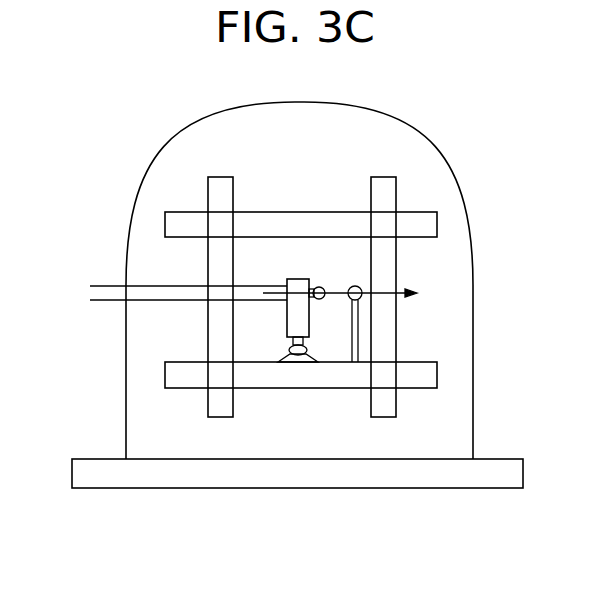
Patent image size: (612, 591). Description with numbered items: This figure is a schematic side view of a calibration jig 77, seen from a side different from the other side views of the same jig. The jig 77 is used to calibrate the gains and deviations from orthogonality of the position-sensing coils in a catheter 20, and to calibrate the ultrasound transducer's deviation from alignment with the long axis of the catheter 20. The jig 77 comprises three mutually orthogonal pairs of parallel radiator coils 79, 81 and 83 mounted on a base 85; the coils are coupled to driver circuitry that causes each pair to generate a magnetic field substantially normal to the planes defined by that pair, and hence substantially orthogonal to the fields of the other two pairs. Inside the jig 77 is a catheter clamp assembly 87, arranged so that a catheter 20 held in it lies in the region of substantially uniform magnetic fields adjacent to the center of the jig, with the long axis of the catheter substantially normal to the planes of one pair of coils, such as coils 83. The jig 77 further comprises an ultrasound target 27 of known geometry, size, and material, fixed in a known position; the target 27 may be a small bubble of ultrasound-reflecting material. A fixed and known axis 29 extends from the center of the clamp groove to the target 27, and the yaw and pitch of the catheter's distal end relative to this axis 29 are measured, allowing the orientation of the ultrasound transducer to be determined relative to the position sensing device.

The jig 77 is at (128, 143).
The pair of parallel radiator coils 79 is at (443, 160).
The pair of parallel radiator coils 81 is at (418, 237).
The pair of parallel radiator coils 83 is at (220, 177).
The base 85 is at (513, 459).
The catheter 20 is at (158, 286).
The catheter clamp assembly 87 is at (290, 279).
The axis 29 is at (345, 297).
The ultrasound target 27 is at (352, 286).